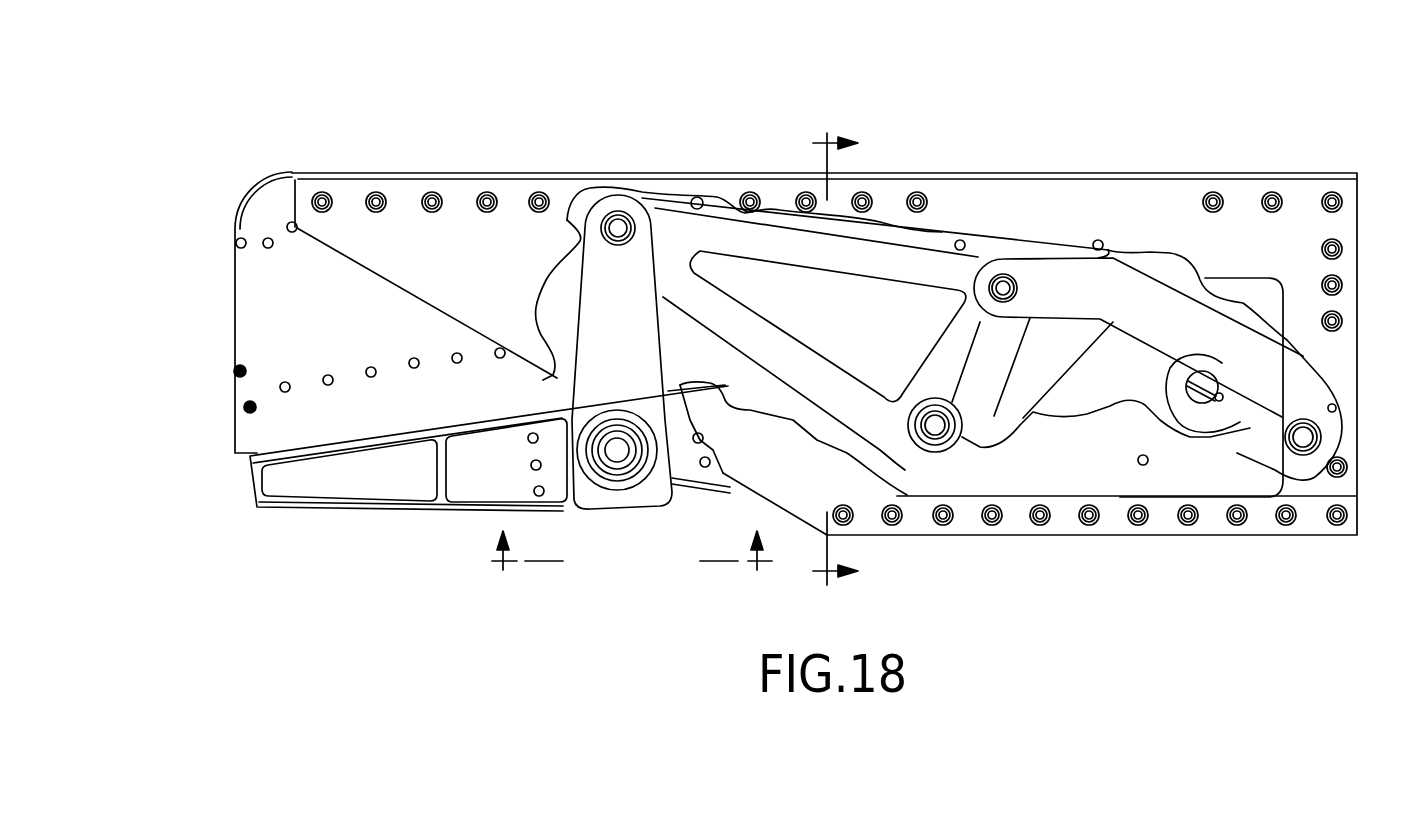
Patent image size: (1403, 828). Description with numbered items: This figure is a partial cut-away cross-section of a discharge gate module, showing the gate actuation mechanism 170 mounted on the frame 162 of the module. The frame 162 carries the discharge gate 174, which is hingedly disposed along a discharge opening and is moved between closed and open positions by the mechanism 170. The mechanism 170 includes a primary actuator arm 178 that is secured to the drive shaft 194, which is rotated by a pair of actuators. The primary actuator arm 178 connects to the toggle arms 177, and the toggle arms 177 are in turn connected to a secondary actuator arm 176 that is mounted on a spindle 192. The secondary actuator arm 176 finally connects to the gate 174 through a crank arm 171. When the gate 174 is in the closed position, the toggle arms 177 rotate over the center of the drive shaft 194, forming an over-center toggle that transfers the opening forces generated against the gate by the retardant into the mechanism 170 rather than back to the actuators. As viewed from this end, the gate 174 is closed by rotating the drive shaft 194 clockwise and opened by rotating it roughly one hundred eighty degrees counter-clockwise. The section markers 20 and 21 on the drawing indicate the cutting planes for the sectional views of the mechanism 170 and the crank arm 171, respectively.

The frame 162 is at (360, 172).
The gate actuation mechanism 170 is at (1036, 192).
The crank arm 171 is at (602, 263).
The discharge gate 174 is at (350, 506).
The secondary actuator arm 176 is at (705, 227).
The toggle arms 177 is at (1125, 277).
The primary actuator arm 178 is at (1250, 440).
The spindle 192 is at (933, 428).
The drive shaft 194 is at (1198, 400).
The section line 20- 20 is at (824, 360).
The section line 21- 21 is at (632, 567).